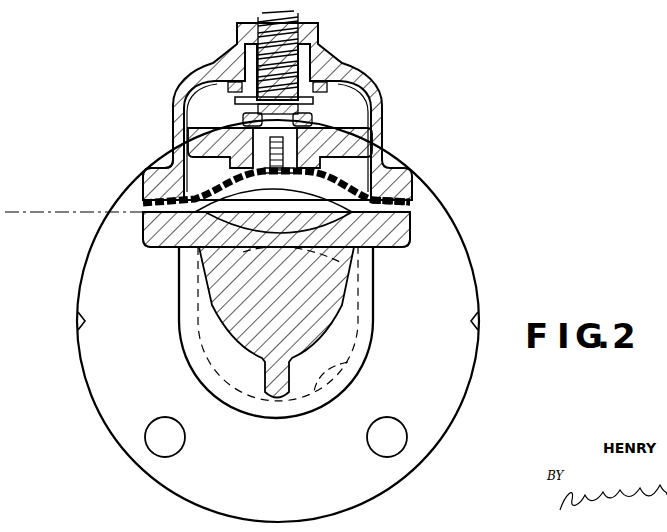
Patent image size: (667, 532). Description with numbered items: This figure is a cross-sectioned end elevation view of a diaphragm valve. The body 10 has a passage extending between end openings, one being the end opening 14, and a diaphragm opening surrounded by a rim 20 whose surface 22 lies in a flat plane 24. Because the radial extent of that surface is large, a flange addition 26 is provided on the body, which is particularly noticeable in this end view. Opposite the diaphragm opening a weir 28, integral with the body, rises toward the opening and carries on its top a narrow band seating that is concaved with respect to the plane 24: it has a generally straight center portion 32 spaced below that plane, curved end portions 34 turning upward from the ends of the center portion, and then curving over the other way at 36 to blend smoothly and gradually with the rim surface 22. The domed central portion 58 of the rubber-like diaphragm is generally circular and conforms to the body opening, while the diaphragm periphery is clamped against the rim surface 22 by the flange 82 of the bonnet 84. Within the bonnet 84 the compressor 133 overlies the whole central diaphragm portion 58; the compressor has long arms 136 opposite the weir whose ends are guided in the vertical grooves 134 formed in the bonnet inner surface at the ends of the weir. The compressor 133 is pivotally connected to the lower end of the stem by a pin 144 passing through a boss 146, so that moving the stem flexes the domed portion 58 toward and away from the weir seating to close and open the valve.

The body 10 is at (383, 277).
The end opening 14 is at (330, 362).
The rim 20 is at (372, 286).
The surface 22 is at (172, 165).
The flat plane 24 is at (42, 211).
The flange addition 26 is at (395, 230).
The weir 28 is at (283, 262).
The center portion 32 is at (267, 237).
The curved end portions 34 is at (328, 216).
The curved-over portion 36 is at (146, 230).
The domed central portion 58 is at (167, 259).
The bonnet flange 82 is at (170, 190).
The bonnet 84 is at (397, 98).
The compressor 133 is at (330, 120).
The vertical grooves 134 is at (353, 165).
The long arms 136 is at (370, 130).
The pin 144 is at (148, 197).
The boss 146 is at (387, 220).